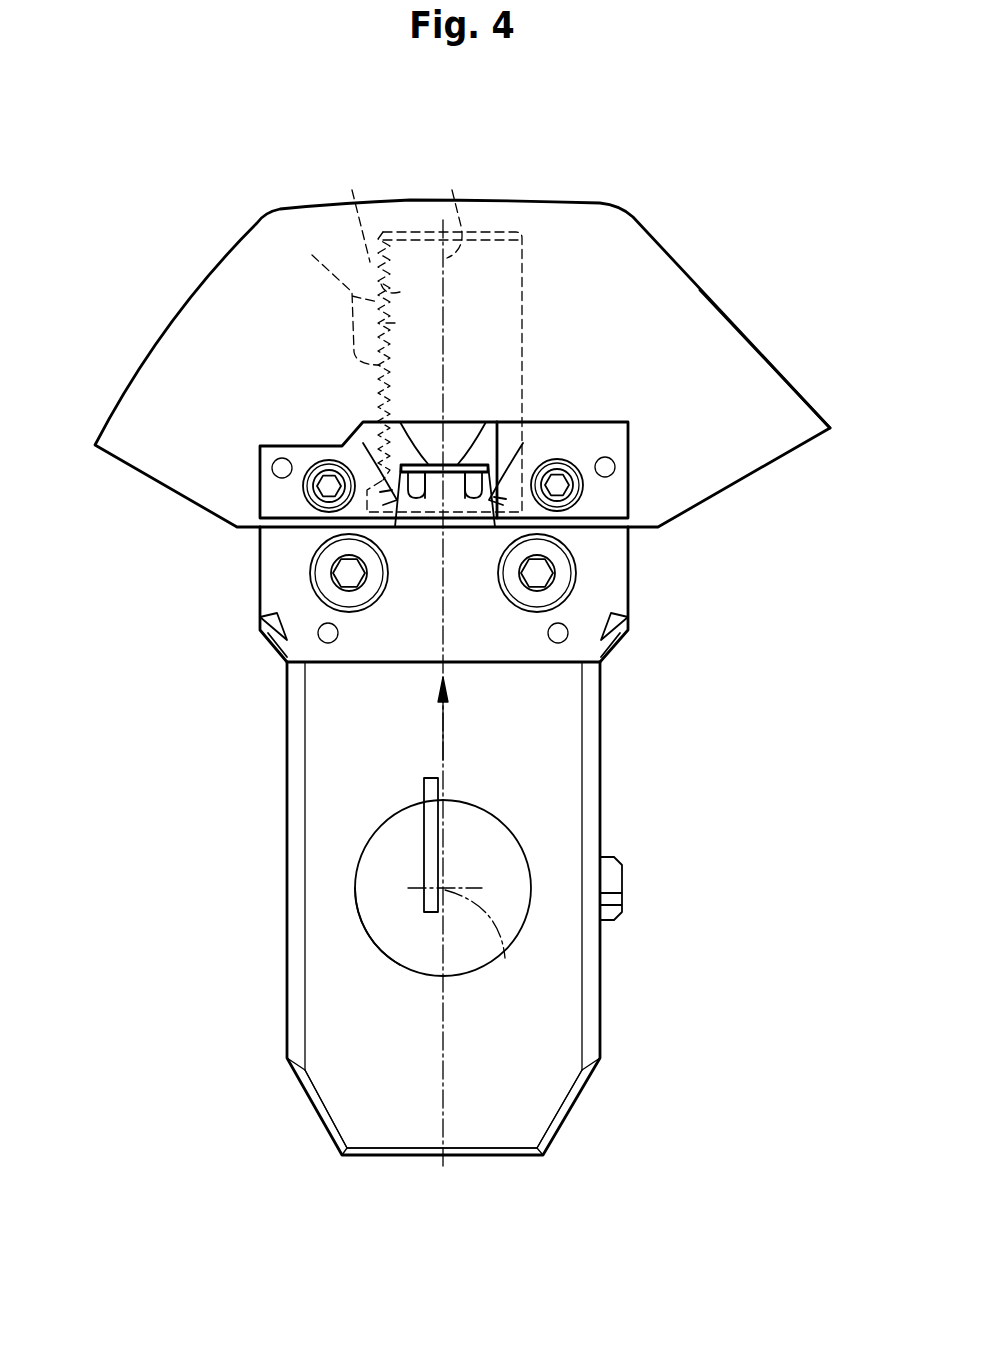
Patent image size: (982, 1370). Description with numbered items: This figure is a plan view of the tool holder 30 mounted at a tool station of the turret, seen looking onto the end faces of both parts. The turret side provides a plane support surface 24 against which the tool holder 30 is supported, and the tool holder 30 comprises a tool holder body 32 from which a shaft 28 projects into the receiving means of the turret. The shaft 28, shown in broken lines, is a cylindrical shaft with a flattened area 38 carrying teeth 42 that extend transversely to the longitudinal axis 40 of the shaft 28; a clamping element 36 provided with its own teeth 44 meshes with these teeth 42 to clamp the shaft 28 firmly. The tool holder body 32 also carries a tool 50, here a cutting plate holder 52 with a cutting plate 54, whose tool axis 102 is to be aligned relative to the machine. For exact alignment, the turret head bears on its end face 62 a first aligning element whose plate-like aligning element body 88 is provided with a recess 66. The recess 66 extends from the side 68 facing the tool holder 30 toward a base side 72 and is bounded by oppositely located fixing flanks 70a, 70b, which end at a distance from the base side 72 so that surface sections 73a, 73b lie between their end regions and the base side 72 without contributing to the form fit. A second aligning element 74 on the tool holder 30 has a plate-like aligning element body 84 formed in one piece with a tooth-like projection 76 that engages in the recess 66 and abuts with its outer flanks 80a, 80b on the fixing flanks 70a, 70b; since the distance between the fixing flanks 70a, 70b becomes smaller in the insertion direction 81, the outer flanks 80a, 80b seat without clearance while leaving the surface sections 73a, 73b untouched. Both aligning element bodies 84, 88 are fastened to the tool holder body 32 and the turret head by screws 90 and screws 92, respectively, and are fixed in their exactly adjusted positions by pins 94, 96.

The support surface 24 is at (162, 487).
The shaft 28 is at (510, 270).
The tool holder 30 is at (266, 830).
The tool holder body 32 is at (568, 1040).
The clamping element 36 is at (340, 280).
The flattened area 38 is at (355, 217).
The longitudinal axis 40 is at (442, 210).
The teeth 42 is at (400, 292).
The teeth 44 is at (395, 323).
The tool 50 is at (508, 806).
The cutting plate holder 52 is at (385, 933).
The cutting plate 54 is at (432, 798).
The end face 62 is at (777, 438).
The recess 66 is at (436, 488).
The side 68 is at (287, 527).
The fixing flank 70a is at (398, 438).
The fixing flank 70b is at (472, 465).
The base side 72 is at (458, 473).
The surface section 73a is at (383, 500).
The surface section 73b is at (490, 496).
The second aligning element 74 is at (277, 613).
The tooth-like projection 76 is at (440, 456).
The outer flank 80a is at (387, 490).
The outer flank 80b is at (497, 498).
The insertion direction 81 is at (443, 718).
The plate-like aligning element body 84 is at (630, 637).
The plate-like aligning element body 88 is at (613, 503).
The screws 90 is at (543, 572).
The screws 92 is at (315, 488).
The pins 94 is at (322, 637).
The pins 96 is at (273, 466).
The tool axis 102 is at (505, 958).